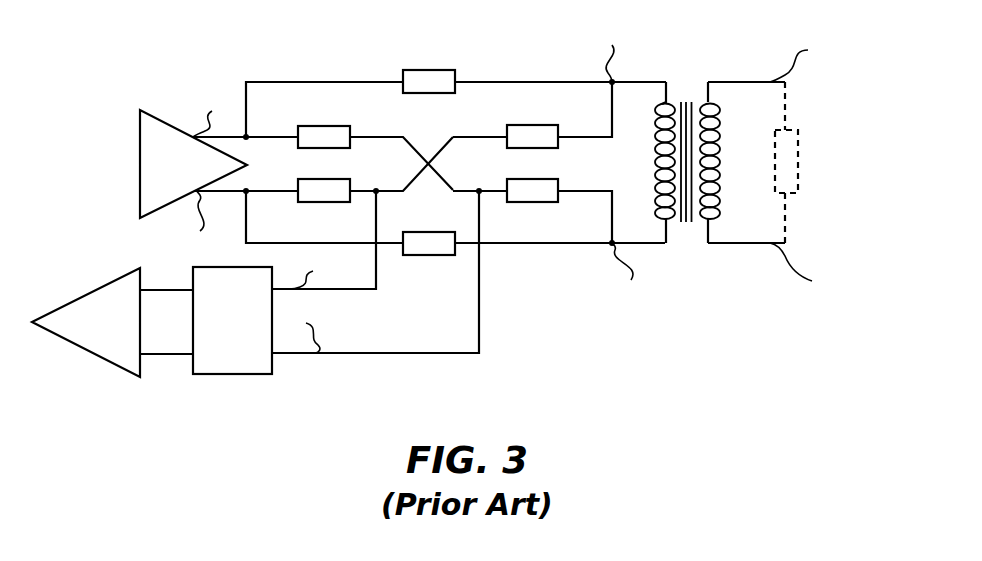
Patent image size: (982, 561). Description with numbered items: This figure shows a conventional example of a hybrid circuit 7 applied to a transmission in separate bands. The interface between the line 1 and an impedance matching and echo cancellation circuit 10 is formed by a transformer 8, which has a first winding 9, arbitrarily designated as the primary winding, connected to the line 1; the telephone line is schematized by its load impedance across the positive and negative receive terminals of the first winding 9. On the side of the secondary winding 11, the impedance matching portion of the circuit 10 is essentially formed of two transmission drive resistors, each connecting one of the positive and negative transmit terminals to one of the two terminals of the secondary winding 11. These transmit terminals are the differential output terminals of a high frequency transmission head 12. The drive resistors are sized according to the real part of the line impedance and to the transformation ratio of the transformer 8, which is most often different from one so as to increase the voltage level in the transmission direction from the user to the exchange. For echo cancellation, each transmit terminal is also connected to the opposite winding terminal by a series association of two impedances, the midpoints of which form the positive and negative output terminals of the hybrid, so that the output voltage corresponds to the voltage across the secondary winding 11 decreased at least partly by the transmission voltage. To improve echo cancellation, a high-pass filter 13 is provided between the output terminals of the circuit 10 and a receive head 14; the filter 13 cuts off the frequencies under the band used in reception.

The line 1 is at (812, 98).
The hybrid circuit 7 is at (646, 65).
The transformer 8 is at (704, 73).
The first winding 9 is at (719, 117).
The impedance matching and echo cancellation circuit 10 is at (321, 67).
The secondary winding 11 is at (656, 139).
The high frequency transmission head 12 is at (155, 112).
The high-pass filter 13 is at (193, 278).
The receive head 14 is at (85, 295).